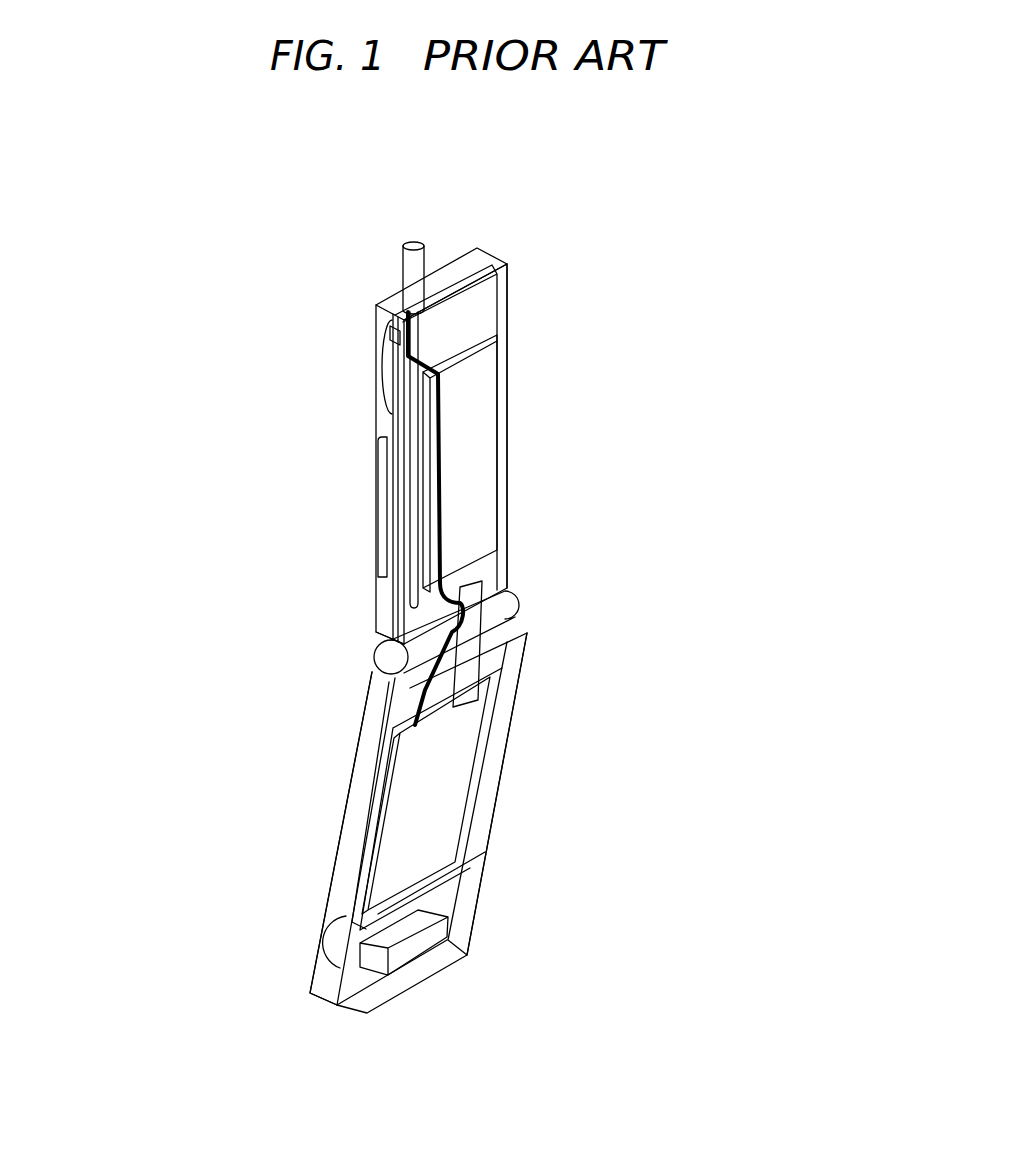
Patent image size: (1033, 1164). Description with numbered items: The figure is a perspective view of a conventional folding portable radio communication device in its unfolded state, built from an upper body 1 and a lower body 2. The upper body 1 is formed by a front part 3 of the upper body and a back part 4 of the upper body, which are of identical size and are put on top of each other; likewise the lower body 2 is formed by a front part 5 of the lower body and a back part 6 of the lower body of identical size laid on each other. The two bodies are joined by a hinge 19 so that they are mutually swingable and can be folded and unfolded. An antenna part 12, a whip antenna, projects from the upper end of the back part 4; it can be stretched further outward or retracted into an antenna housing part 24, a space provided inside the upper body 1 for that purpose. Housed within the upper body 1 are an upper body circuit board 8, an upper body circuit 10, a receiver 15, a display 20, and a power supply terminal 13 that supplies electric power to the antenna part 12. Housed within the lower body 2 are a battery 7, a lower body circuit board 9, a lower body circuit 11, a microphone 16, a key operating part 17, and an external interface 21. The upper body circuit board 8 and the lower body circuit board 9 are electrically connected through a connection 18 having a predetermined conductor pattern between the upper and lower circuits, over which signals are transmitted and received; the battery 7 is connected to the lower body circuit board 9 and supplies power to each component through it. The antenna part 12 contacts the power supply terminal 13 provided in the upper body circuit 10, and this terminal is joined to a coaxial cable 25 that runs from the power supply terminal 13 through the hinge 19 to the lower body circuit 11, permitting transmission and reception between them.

The upper body 1 is at (515, 252).
The lower body 2 is at (485, 950).
The front part of the upper body 3 is at (383, 294).
The back part of the upper body 4 is at (512, 290).
The front part of the lower body 5 is at (324, 881).
The back part of the lower body 6 is at (483, 920).
The battery 7 is at (480, 809).
The upper body circuit board 8 is at (476, 315).
The lower body circuit board 9 is at (491, 670).
The upper body circuit 10 is at (480, 522).
The lower body circuit 11 is at (436, 892).
The antenna part 12 is at (430, 235).
The power supply terminal 13 is at (393, 338).
The receiver 15 is at (376, 382).
The microphone 16 is at (335, 963).
The key operating part 17 is at (344, 807).
The connection between the upper and lower circuits 18 is at (490, 612).
The hinge 19 is at (371, 658).
The display 20 is at (376, 500).
The external interface 21 is at (404, 953).
The antenna housing part 24 is at (404, 435).
The coaxial cable 25 is at (446, 441).